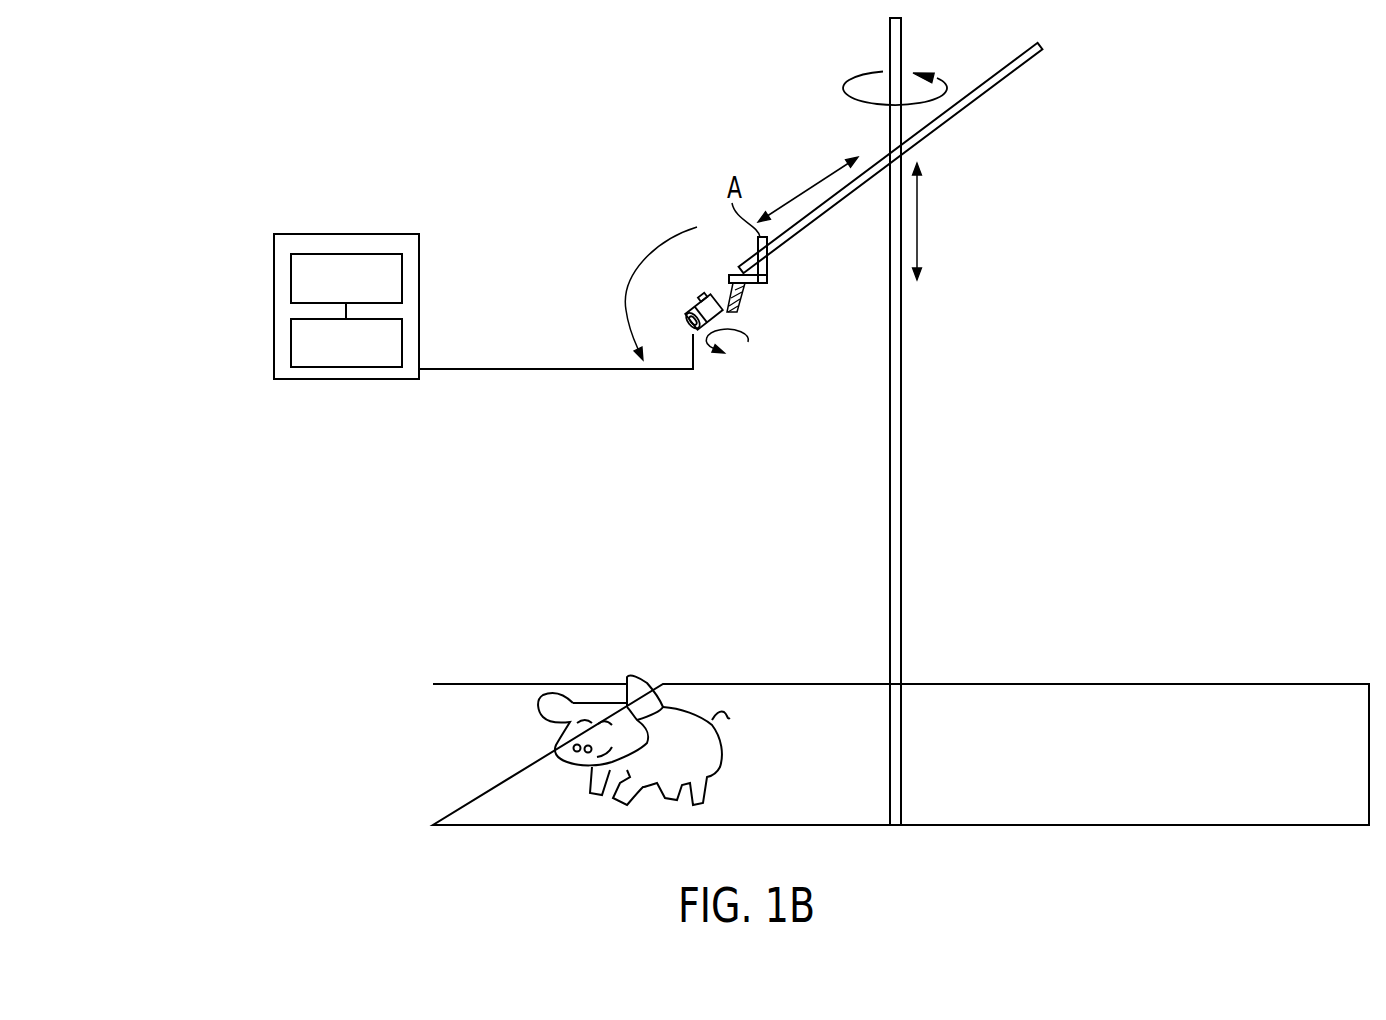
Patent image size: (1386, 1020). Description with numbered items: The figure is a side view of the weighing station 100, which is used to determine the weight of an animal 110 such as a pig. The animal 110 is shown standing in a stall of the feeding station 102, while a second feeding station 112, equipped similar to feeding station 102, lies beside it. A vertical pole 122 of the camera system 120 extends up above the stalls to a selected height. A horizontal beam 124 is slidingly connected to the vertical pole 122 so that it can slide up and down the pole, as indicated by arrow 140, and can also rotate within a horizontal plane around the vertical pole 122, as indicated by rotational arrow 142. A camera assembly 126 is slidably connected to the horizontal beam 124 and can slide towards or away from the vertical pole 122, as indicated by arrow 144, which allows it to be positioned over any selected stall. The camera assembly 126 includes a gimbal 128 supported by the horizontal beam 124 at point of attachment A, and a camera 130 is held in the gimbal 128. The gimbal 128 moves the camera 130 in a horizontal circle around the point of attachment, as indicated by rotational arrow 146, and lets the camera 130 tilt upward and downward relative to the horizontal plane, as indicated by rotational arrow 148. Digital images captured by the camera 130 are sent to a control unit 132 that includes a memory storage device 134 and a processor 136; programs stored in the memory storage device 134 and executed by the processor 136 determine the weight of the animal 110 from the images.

The weighing station 100 is at (226, 155).
The feeding station 102 is at (478, 683).
The animal 110 is at (667, 707).
The feeding station 112 is at (1243, 684).
The camera system 120 is at (1164, 335).
The vertical pole 122 is at (902, 385).
The horizontal beam 124 is at (983, 95).
The camera assembly 126 is at (706, 190).
The gimbal 128 is at (767, 283).
The camera 130 is at (697, 293).
The control unit 132 is at (361, 234).
The memory storage device 134 is at (403, 283).
The processor 136 is at (403, 343).
The arrow 140 is at (917, 193).
The rotational arrow 142 is at (862, 72).
The arrow 144 is at (813, 185).
The rotational arrow 146 is at (748, 345).
The rotational arrow 148 is at (643, 254).